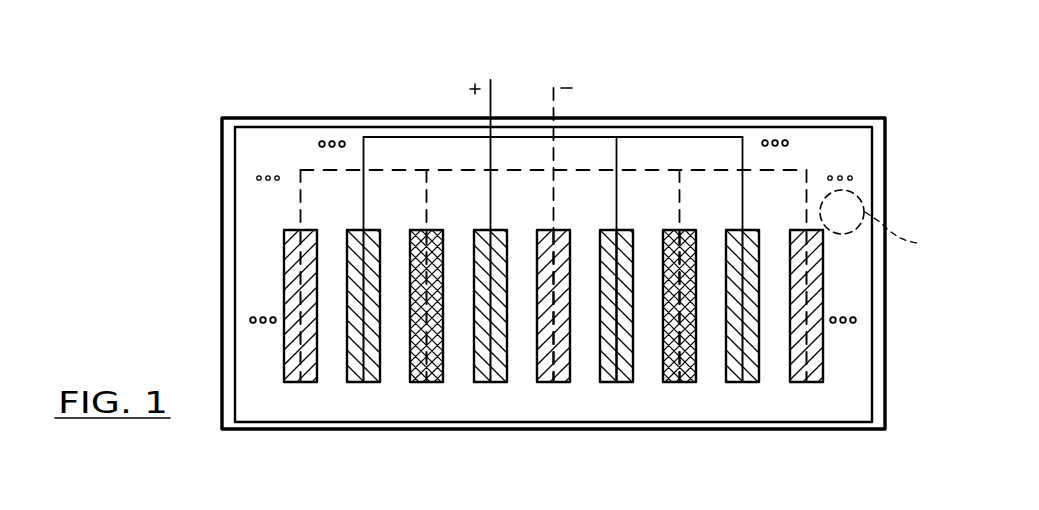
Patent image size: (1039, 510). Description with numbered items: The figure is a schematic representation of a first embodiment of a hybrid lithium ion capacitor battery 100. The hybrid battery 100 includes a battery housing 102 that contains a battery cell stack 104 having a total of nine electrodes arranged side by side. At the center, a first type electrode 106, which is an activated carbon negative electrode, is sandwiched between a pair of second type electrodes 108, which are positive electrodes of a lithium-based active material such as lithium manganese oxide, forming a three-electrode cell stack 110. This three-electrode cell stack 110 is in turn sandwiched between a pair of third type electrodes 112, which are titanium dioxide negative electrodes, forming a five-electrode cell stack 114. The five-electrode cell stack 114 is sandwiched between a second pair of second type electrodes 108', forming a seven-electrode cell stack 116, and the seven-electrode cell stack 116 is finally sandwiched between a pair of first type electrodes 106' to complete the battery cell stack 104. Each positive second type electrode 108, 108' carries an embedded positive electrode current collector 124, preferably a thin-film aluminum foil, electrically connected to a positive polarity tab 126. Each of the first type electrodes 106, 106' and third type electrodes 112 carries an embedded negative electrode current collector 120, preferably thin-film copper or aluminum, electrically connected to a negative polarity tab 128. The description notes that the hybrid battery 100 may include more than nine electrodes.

The hybrid lithium ion capacitor battery 100 is at (970, 129).
The battery housing 102 is at (887, 166).
The battery cell stack 104 is at (845, 130).
The first type electrode 106 is at (584, 350).
The first type electrodes 106' is at (587, 350).
The second type electrodes 108 is at (584, 350).
The second pair of second type electrodes 108' is at (586, 350).
The 3-electrode cell stack 110 is at (480, 187).
The third type electrodes 112 is at (443, 376).
The 5-electrode cell stack 114 is at (417, 194).
The 7-electrode cell stack 116 is at (352, 182).
The negative electrode current collector 120 is at (556, 273).
The positive electrode current collector 124 is at (617, 273).
The positive polarity tab 126 is at (487, 96).
The negative polarity tab 128 is at (557, 142).